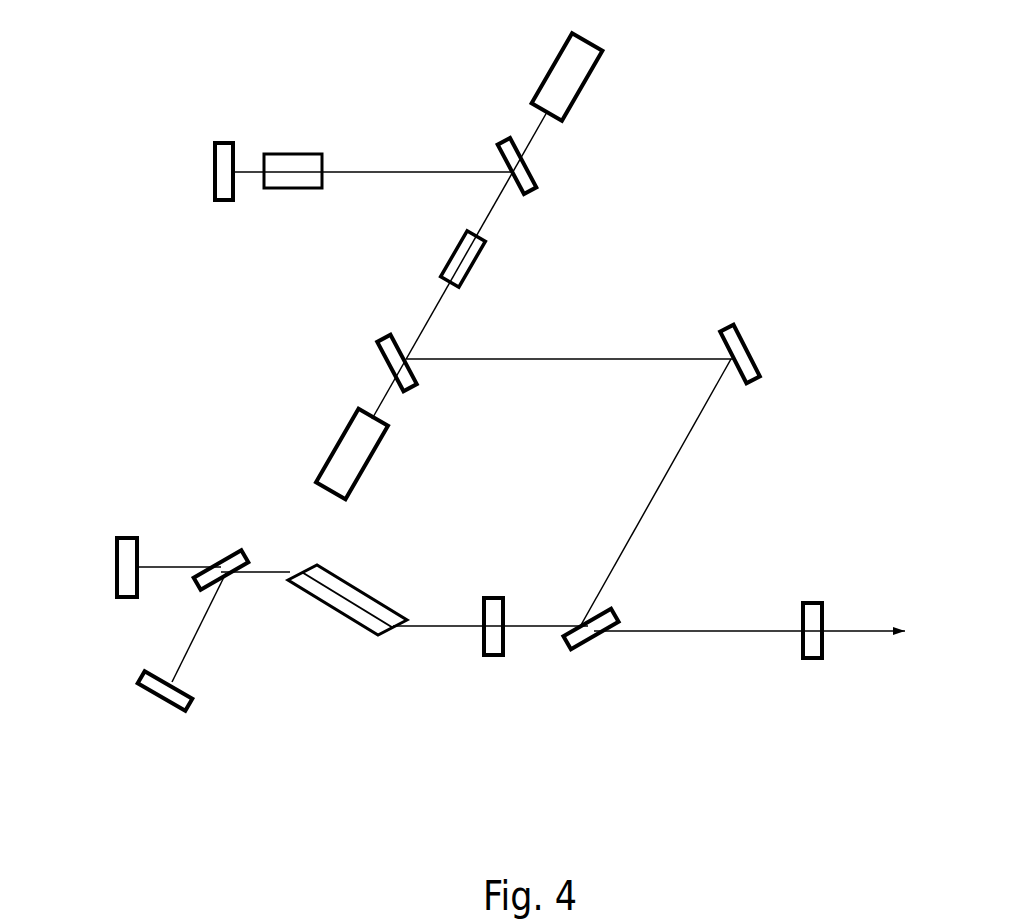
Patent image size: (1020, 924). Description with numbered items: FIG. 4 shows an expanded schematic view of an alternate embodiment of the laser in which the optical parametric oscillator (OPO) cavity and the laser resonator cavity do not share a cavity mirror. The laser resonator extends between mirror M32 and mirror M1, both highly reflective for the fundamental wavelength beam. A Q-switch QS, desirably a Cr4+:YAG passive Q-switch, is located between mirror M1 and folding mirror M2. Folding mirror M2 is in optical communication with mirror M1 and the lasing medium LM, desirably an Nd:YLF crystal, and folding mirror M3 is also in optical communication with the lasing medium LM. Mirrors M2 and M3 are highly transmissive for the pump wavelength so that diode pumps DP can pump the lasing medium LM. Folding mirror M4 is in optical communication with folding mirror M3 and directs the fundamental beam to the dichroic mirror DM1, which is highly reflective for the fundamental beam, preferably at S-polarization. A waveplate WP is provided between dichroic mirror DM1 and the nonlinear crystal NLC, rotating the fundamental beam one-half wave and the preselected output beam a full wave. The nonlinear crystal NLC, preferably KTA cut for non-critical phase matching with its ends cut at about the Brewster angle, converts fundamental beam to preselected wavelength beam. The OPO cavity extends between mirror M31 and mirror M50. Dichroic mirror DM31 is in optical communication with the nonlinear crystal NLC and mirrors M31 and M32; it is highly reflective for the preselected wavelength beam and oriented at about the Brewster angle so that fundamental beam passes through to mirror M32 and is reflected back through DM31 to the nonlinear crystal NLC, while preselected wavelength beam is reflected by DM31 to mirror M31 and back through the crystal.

The mirror M1 is at (207, 152).
The Q-switch QS is at (293, 147).
The diode pump DP is at (432, 259).
The folding mirror M2 is at (546, 174).
The lasing medium LM is at (434, 259).
The folding mirror M3 is at (370, 359).
The folding mirror M4 is at (761, 354).
The dichroic mirror DM1 is at (586, 652).
The waveplate WP is at (490, 648).
The mirror M50 is at (806, 654).
The nonlinear crystal NLC is at (347, 632).
The mirror M32 is at (83, 567).
The dichroic mirror DM31 is at (235, 552).
The mirror M31 is at (163, 710).